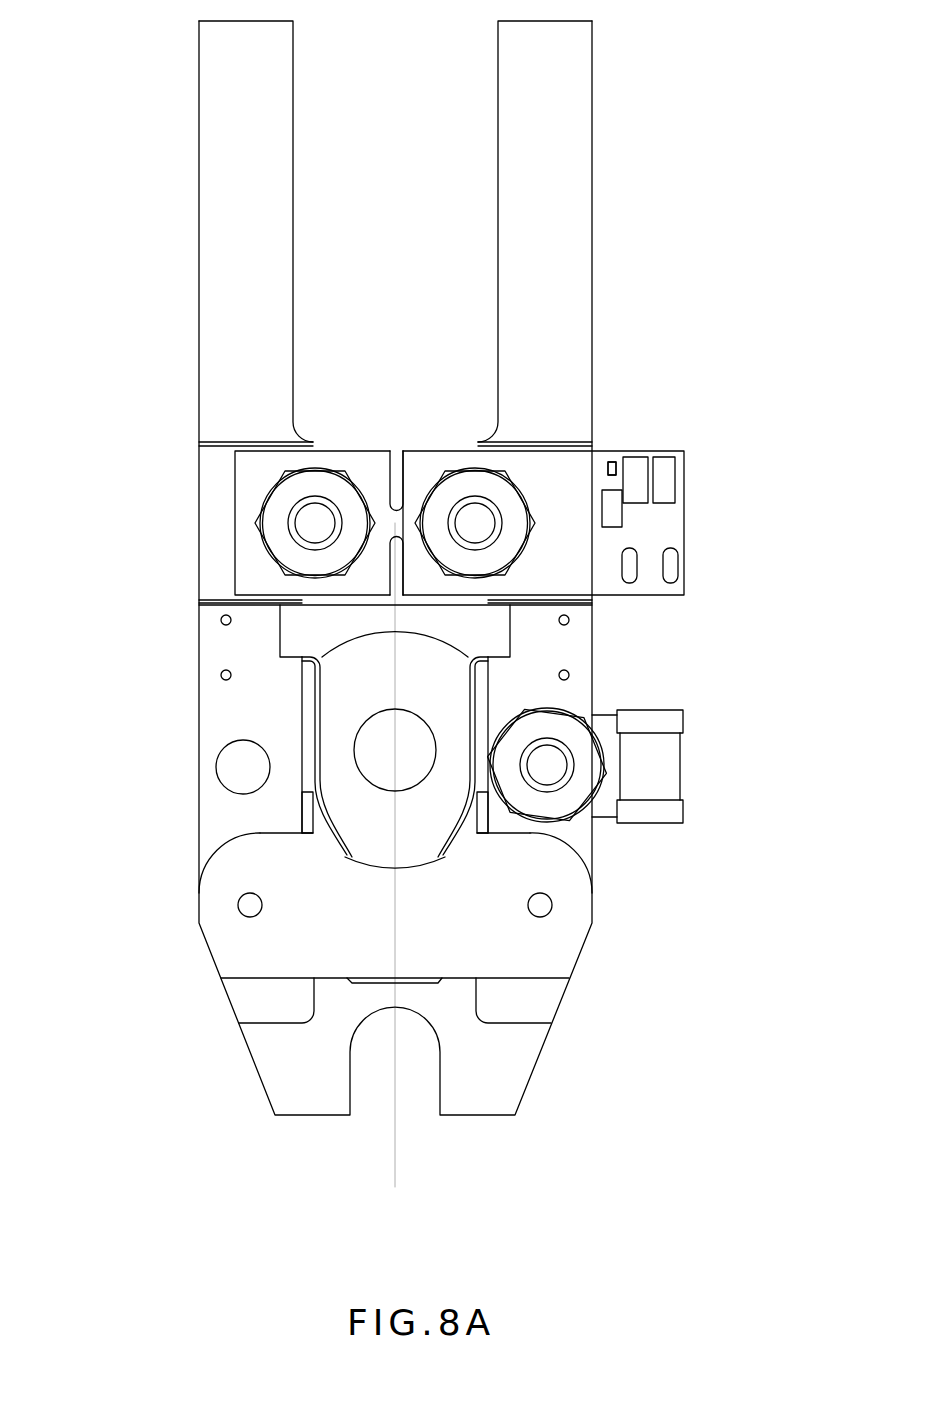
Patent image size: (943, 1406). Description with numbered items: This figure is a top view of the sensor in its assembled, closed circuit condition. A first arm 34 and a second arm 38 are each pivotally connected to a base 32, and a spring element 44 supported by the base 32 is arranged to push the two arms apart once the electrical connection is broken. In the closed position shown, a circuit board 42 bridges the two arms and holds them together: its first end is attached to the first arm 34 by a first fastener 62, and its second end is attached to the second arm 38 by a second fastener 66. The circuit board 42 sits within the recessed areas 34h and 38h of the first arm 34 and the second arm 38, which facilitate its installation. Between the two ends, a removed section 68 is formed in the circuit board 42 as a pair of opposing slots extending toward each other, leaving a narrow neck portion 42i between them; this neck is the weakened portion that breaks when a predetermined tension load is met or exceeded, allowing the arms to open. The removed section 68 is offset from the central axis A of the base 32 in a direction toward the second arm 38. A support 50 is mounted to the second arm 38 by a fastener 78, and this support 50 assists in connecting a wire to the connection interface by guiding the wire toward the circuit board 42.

The first arm 34 is at (222, 128).
The second arm 38 is at (568, 118).
The recessed area 34h is at (221, 443).
The recessed area 38h is at (627, 458).
The circuit board 42 is at (597, 552).
The narrow neck portion 42i is at (400, 518).
The removed section 68 is at (397, 428).
The first fastener 62 is at (318, 522).
The second fastener 66 is at (478, 525).
The spring element 44 is at (320, 742).
The support 50 is at (603, 803).
The fastener 78 is at (547, 767).
The base 32 is at (305, 1067).
The central axis A is at (393, 1143).